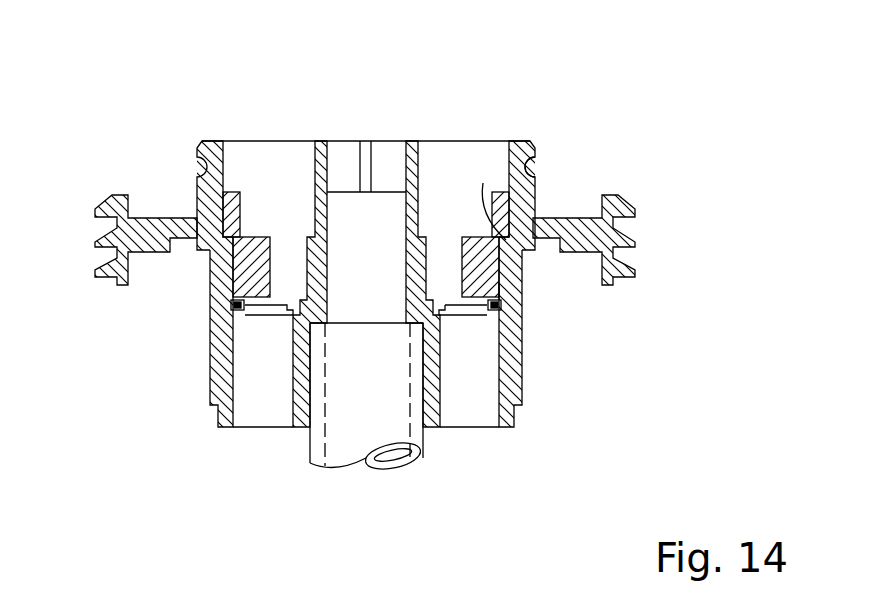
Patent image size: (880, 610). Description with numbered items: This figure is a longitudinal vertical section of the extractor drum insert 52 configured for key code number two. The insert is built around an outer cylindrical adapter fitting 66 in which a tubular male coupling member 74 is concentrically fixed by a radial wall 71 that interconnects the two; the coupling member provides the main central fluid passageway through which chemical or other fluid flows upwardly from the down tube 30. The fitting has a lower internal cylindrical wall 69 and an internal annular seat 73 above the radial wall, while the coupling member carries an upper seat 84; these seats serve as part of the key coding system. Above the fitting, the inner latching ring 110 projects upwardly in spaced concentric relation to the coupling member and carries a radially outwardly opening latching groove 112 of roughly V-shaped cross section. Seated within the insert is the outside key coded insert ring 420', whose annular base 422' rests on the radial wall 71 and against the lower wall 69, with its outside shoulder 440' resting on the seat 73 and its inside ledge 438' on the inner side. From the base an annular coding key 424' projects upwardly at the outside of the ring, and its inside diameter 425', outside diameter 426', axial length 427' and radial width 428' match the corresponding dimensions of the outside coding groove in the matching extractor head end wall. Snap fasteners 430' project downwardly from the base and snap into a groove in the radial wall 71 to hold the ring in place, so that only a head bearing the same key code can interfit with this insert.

The down tube 30 is at (310, 465).
The extractor drum insert 52 is at (515, 428).
The adapter fitting 66 is at (218, 428).
The lower internal cylindrical wall 69 is at (232, 304).
The radial wall 71 is at (232, 312).
The internal annular seat 73 is at (483, 183).
The tubular male coupling member 74 is at (421, 192).
The upper seat 84 is at (424, 237).
The inner latching ring 110 is at (533, 143).
The latching groove 112 is at (528, 168).
The key coded insert ring 420' is at (152, 180).
The annular base 422' is at (576, 316).
The coding key 424' is at (360, 222).
The inside diameter 425' is at (368, 132).
The outside diameter 426' is at (365, 88).
The axial length 427' is at (47, 215).
The radial width 428' is at (174, 90).
The snap fastener 430' is at (565, 332).
The inside ledge 438' is at (266, 234).
The outside shoulder 440' is at (147, 261).